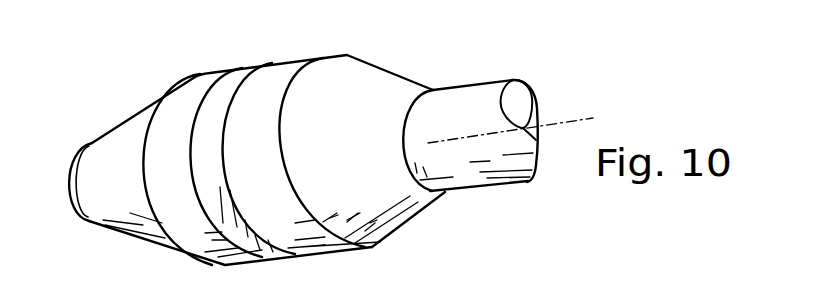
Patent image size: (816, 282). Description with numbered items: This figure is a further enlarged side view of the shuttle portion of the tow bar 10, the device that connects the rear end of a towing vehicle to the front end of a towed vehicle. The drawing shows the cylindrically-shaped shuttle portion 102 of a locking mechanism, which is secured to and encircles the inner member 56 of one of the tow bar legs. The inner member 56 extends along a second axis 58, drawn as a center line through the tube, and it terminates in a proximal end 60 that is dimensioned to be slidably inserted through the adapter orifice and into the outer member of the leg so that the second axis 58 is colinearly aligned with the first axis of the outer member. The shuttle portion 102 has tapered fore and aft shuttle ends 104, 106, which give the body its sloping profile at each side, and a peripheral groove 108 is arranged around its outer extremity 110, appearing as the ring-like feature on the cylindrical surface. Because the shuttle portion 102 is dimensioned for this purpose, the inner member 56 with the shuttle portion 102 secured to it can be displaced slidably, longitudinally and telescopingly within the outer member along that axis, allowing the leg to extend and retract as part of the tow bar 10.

The tow bar 10 is at (622, 73).
The inner member 56 is at (475, 90).
The second axis 58 is at (568, 123).
The proximal end 60 is at (473, 181).
The shuttle portion 102 is at (154, 55).
The fore shuttle end 104 is at (118, 132).
The aft shuttle end 106 is at (385, 75).
The peripheral groove 108 is at (274, 54).
The outer extremity 110 is at (212, 77).